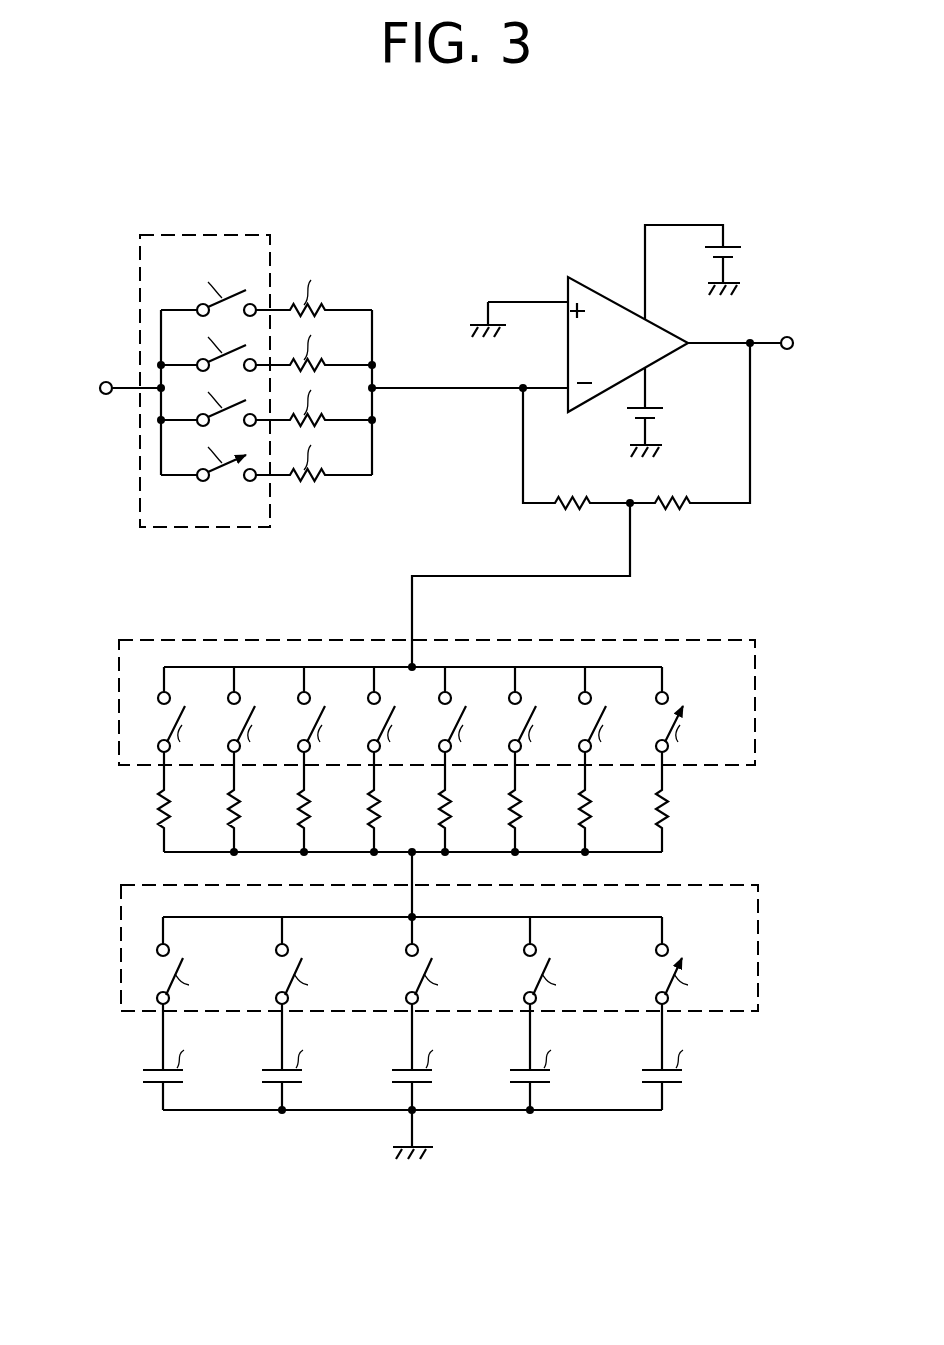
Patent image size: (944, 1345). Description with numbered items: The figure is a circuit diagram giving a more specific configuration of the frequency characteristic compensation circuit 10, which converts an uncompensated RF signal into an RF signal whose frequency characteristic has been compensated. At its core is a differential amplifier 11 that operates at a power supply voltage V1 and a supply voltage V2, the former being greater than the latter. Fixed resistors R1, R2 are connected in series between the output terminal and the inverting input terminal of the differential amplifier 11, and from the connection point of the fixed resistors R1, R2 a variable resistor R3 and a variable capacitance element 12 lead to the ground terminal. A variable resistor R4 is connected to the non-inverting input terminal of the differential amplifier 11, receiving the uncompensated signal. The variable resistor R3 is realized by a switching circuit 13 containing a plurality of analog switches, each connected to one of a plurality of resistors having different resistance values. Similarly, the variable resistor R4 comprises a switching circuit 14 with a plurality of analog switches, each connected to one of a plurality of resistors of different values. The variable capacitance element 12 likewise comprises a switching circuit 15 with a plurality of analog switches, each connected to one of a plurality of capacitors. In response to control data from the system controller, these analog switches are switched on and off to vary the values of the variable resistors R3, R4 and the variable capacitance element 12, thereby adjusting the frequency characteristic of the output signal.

The frequency characteristic compensation circuit 10 is at (469, 190).
The differential amplifier 11 is at (596, 293).
The variable capacitance element 12 is at (106, 916).
The switching circuit 13 is at (757, 658).
The switching circuit 14 is at (223, 233).
The switching circuit 15 is at (758, 898).
The fixed resistor R1 is at (563, 508).
The fixed resistor R2 is at (669, 508).
The variable resistor R3 is at (106, 690).
The variable resistor R4 is at (332, 230).
The power supply voltage V1 is at (720, 272).
The supply voltage V2 is at (673, 416).